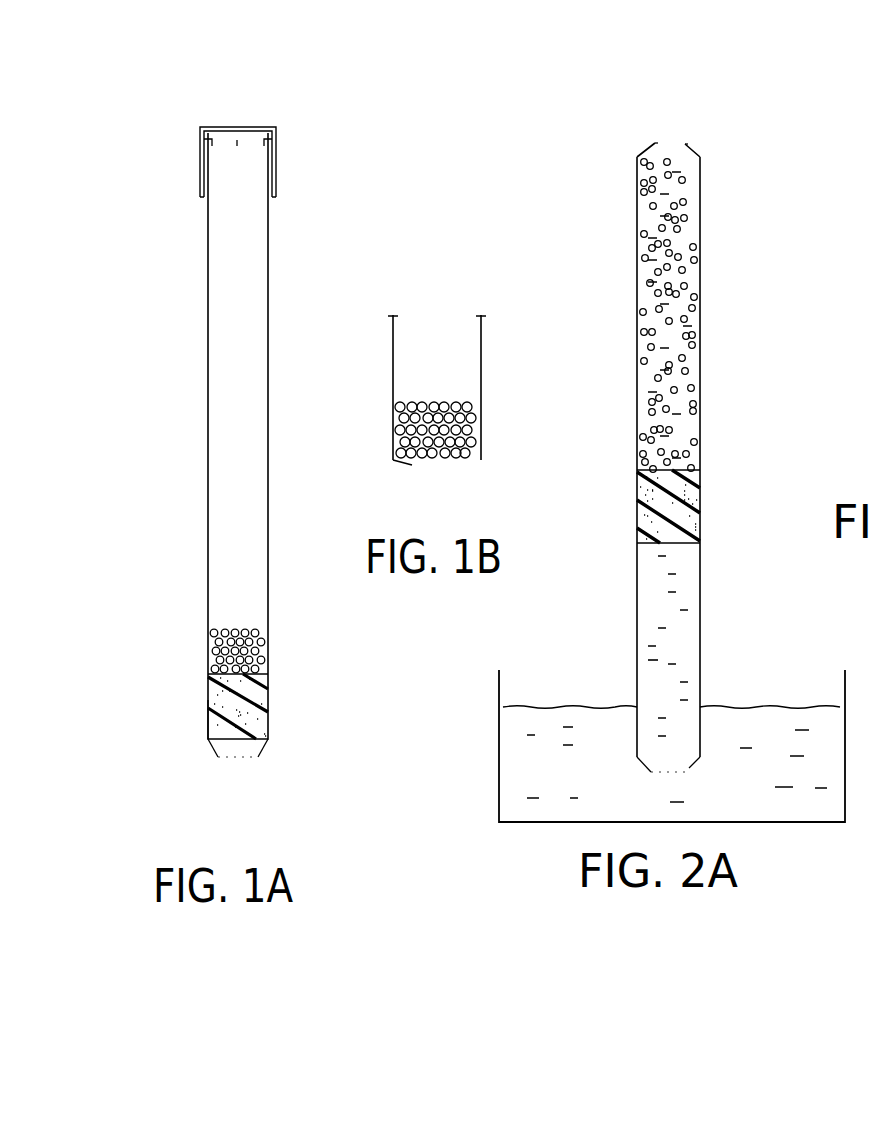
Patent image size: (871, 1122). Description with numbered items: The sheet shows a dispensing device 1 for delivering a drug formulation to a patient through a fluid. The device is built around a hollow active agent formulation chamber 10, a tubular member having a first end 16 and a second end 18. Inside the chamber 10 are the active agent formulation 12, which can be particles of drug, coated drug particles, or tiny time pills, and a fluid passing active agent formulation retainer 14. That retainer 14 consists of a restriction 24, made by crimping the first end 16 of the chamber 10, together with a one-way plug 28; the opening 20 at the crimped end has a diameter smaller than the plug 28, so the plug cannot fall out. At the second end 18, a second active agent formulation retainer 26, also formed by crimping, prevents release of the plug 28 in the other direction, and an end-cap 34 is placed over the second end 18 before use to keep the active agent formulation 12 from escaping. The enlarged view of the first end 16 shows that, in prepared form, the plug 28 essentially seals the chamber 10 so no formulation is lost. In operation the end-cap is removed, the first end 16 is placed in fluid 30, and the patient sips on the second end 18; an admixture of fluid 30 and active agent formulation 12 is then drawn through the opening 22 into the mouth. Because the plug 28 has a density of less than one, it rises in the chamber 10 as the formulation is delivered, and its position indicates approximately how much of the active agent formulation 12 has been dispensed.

In FIG. 1A, the dispensing device 1 is at (295, 261).
In FIG. 2A, the dispensing device 1 is at (747, 189).
In FIG. 1A, the active agent formulation chamber 10 is at (268, 462).
In FIG. 2A, the active agent formulation chamber 10 is at (703, 593).
In FIG. 1A, the active agent formulation 12 is at (265, 642).
In FIG. 2A, the active agent formulation 12 is at (682, 280).
In FIG. 1A, the fluid passing active agent formulation retainer 14 is at (207, 732).
In FIG. 1A, the first end 16 is at (257, 752).
In FIG. 1B, the first end 16 is at (470, 462).
In FIG. 2A, the first end 16 is at (690, 765).
In FIG. 1A, the second end 18 is at (275, 138).
In FIG. 2A, the second end 18 is at (697, 152).
In FIG. 1A, the opening 20 is at (243, 760).
In FIG. 2A, the opening 20 is at (670, 777).
In FIG. 1A, the opening 22 is at (237, 143).
In FIG. 2A, the opening 22 is at (665, 138).
In FIG. 1A, the restriction 24 is at (210, 747).
In FIG. 2A, the restriction 24 is at (648, 770).
In FIG. 1A, the active agent formulation retainer 26 is at (203, 138).
In FIG. 1A, the one-way plug 28 is at (265, 707).
In FIG. 1B, the one-way plug 28 is at (480, 417).
In FIG. 2A, the one-way plug 28 is at (695, 500).
In FIG. 2A, the fluid 30 is at (755, 720).
In FIG. 1A, the end-cap 34 is at (253, 127).